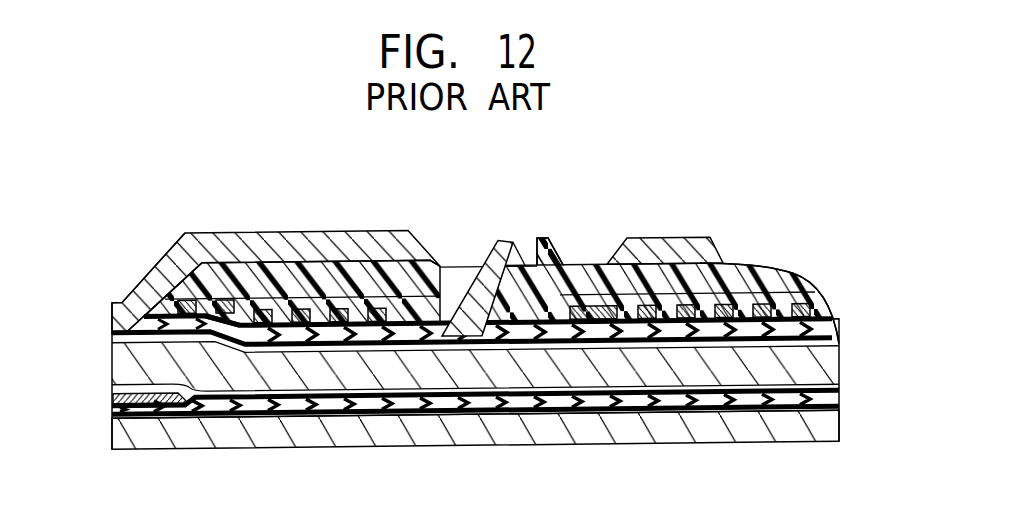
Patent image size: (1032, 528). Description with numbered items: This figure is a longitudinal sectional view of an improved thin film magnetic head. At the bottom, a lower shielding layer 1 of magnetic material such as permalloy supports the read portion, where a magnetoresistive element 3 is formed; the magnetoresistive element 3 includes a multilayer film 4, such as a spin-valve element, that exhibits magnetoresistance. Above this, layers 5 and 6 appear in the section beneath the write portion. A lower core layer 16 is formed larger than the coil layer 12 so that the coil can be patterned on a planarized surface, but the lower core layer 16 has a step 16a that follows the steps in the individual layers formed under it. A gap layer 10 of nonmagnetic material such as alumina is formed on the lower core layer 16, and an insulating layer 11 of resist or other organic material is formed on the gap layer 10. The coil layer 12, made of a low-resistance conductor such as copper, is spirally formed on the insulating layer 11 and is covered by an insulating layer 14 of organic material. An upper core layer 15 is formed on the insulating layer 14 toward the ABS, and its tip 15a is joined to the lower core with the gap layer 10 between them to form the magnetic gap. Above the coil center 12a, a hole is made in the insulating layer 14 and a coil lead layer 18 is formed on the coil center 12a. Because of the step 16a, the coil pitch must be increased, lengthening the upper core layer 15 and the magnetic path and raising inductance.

The lower shielding layer 1 is at (812, 419).
The magnetoresistive element 3 is at (106, 390).
The multilayer film 4 is at (165, 403).
The gate insulating layer 5 is at (262, 406).
The semiconductor layer 6 is at (343, 397).
The gap layer 10 is at (516, 346).
The insulating layer 11 is at (419, 334).
The coil layer 12 is at (285, 283).
The coil center 12a is at (588, 308).
The insulating layer 14 is at (802, 298).
The upper core layer 15 is at (330, 251).
The tip 15a is at (132, 299).
The lower core layer 16 is at (412, 375).
The step 16a is at (226, 322).
The coil lead layer 18 is at (546, 258).